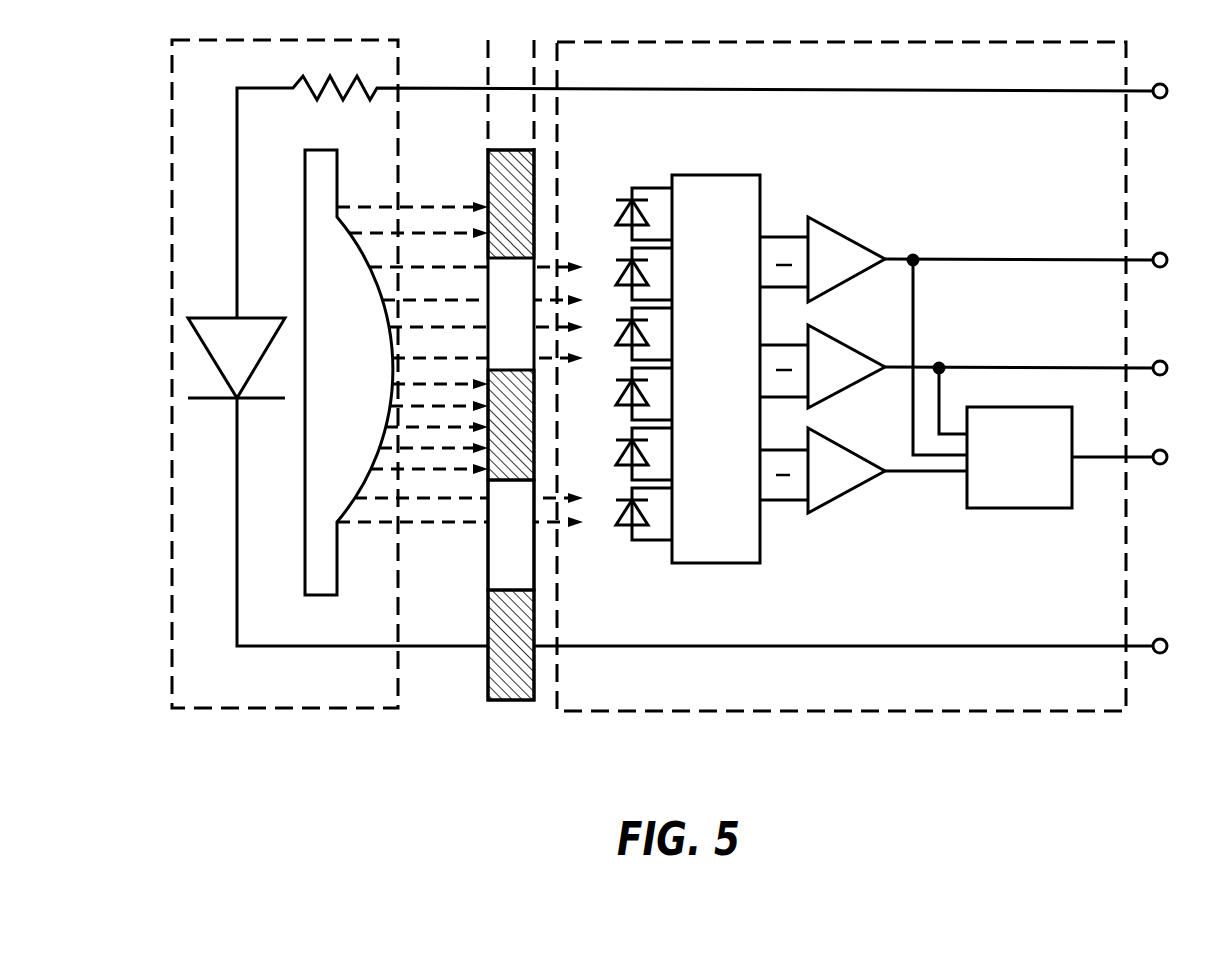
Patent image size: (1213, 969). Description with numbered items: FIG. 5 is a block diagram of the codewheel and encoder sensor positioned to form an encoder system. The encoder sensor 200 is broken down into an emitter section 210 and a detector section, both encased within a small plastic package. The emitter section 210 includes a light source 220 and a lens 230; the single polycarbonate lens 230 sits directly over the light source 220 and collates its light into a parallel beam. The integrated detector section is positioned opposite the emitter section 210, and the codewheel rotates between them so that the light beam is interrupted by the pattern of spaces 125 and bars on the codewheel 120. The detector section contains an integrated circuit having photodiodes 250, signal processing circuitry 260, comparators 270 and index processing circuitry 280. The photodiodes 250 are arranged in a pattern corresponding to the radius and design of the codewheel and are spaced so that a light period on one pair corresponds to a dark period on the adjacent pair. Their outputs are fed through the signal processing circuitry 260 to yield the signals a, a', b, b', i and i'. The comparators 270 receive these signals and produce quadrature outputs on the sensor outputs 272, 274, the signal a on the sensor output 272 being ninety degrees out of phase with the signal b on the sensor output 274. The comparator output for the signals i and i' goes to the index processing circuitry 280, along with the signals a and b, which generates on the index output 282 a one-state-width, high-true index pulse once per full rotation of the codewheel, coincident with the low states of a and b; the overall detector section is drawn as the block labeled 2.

The encoder sensor 200 is at (234, 38).
The emitter section 210 is at (222, 693).
The light source 220 is at (214, 316).
The lens 230 is at (305, 435).
The code wheel 120 is at (495, 672).
The spaces 125 is at (498, 565).
The photodiodes 250 is at (720, 150).
The signal processing circuitry 260 is at (731, 185).
The comparators 270 is at (850, 253).
The index processing circuitry 280 is at (1032, 407).
The detector section 2 is at (1003, 713).
The sensor output 272 is at (1168, 263).
The sensor output 274 is at (1168, 372).
The index output 282 is at (1168, 460).